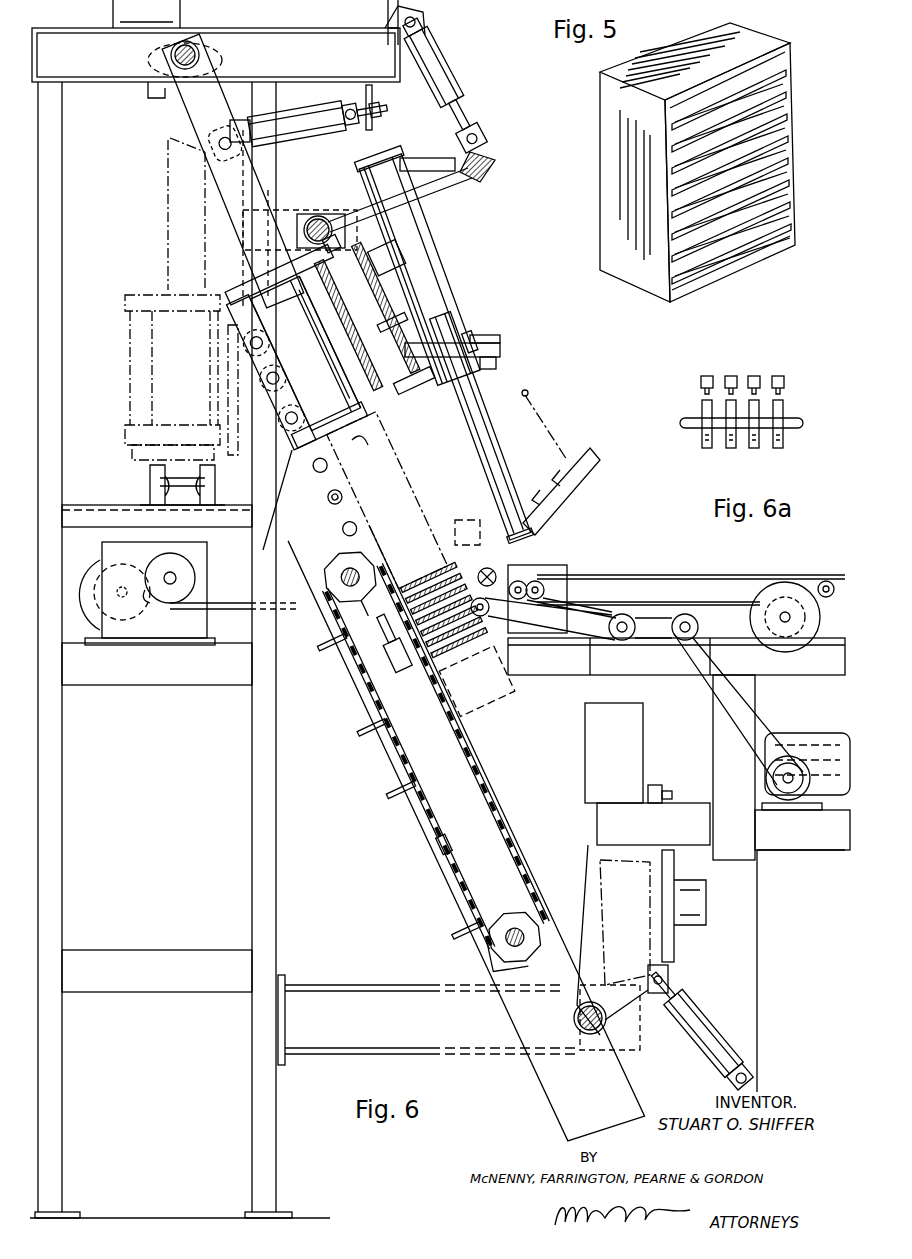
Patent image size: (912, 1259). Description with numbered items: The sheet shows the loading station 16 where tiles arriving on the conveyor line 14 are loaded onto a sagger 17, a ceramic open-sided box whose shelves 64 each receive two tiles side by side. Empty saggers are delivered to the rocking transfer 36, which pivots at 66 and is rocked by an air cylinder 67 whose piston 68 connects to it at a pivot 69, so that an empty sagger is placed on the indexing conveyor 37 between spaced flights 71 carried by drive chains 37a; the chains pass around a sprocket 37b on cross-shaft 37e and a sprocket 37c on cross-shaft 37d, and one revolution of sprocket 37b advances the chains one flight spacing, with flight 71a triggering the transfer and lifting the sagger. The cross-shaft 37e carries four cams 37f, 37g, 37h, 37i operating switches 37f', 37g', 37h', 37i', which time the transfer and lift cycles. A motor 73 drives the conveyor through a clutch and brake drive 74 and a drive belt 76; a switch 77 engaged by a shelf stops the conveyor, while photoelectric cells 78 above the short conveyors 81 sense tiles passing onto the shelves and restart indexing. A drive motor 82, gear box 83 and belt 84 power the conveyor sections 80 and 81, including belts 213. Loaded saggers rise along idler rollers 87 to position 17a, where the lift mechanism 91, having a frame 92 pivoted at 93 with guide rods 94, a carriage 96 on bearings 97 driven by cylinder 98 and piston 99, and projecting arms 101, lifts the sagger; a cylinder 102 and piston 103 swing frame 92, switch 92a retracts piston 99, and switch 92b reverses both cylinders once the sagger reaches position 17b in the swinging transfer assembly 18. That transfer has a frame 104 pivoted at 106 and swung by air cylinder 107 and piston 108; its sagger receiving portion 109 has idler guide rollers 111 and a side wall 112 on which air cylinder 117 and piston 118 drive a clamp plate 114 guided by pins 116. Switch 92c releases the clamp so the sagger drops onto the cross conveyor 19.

In FIG. 6, the conveyor line 14 is at (834, 583).
In FIG. 6, the loading station 16 is at (568, 511).
In FIG. 5, the sagger 17 is at (648, 280).
In FIG. 6, the sagger 17 is at (462, 548).
In FIG. 6, the sagger phantom position 17a is at (410, 490).
In FIG. 6, the sagger transfer position 17b is at (318, 365).
In FIG. 6, the swinging transfer assembly 18 is at (288, 200).
In FIG. 6, the cross conveyor 19 is at (152, 483).
In FIG. 6, the rocking transfer 36 is at (675, 942).
In FIG. 6, the indexing conveyor 37 is at (458, 905).
In FIG. 6, the drive chains 37a is at (450, 878).
In FIG. 6, the sprocket 37b is at (505, 945).
In FIG. 6, the sprocket 37c is at (338, 598).
In FIG. 6, the cross-shaft 37d is at (355, 590).
In FIG. 6a, the cross-shaft 37e is at (800, 420).
In FIG. 6, the cross-shaft 37e is at (516, 950).
In FIG. 6a, the cam 37f is at (702, 435).
In FIG. 6a, the cam 37g is at (729, 442).
In FIG. 6a, the cam 37h is at (761, 435).
In FIG. 6a, the cam 37i is at (792, 435).
In FIG. 6a, the switch 37f' is at (701, 374).
In FIG. 6a, the switch 37g' is at (741, 364).
In FIG. 6a, the switch 37h' is at (763, 373).
In FIG. 6a, the switch 37i' is at (790, 368).
In FIG. 5, the shelves 64 is at (712, 258).
In FIG. 6, the shelves 64 is at (470, 640).
In FIG. 6, the pivot 66 is at (608, 1025).
In FIG. 6, the air cylinder 67 is at (712, 995).
In FIG. 6, the piston 68 is at (680, 985).
In FIG. 6, the pivot 69 is at (652, 990).
In FIG. 6, the flights 71 is at (395, 797).
In FIG. 6, the flight 71a is at (575, 860).
In FIG. 6, the motor 73 is at (100, 585).
In FIG. 6, the clutch and brake drive 74 is at (172, 562).
In FIG. 6, the drive belt 76 is at (238, 603).
In FIG. 6, the switch 77 is at (398, 668).
In FIG. 6, the photoelectric cell 78 is at (490, 568).
In FIG. 6, the conveyor section 80 is at (665, 575).
In FIG. 6, the short conveyor 81 is at (520, 562).
In FIG. 6, the drive motor 82 is at (815, 733).
In FIG. 6, the gear box 83 is at (795, 802).
In FIG. 6, the belt 84 is at (760, 712).
In FIG. 6, the idler rollers 87 is at (330, 502).
In FIG. 6, the lift mechanism 91 is at (478, 282).
In FIG. 6, the frame 92 is at (420, 236).
In FIG. 6, the switch 92a is at (345, 246).
In FIG. 6, the switch 92b is at (485, 345).
In FIG. 6, the switch 92c is at (152, 100).
In FIG. 6, the pivot 93 is at (320, 216).
In FIG. 6, the guide rods 94 is at (475, 430).
In FIG. 6, the carriage 96 is at (502, 350).
In FIG. 6, the bearings 97 is at (432, 400).
In FIG. 6, the cylinder 98 is at (445, 280).
In FIG. 6, the piston 99 is at (497, 365).
In FIG. 6, the projecting arms 101 is at (370, 432).
In FIG. 6, the cylinder 102 is at (440, 68).
In FIG. 6, the piston 103 is at (470, 114).
In FIG. 6, the frame 104 is at (252, 195).
In FIG. 6, the pivot 106 is at (195, 43).
In FIG. 6, the air cylinder 107 is at (340, 132).
In FIG. 6, the piston 108 is at (255, 120).
In FIG. 6, the sagger receiving portion 109 is at (233, 295).
In FIG. 6, the idler guide rollers 111 is at (270, 340).
In FIG. 6, the side wall 112 is at (376, 350).
In FIG. 6, the clamp plate 114 is at (345, 335).
In FIG. 6, the pins 116 is at (372, 302).
In FIG. 6, the air cylinder 117 is at (398, 310).
In FIG. 6, the piston 118 is at (355, 360).
In FIG. 6, the belts 213 is at (668, 785).